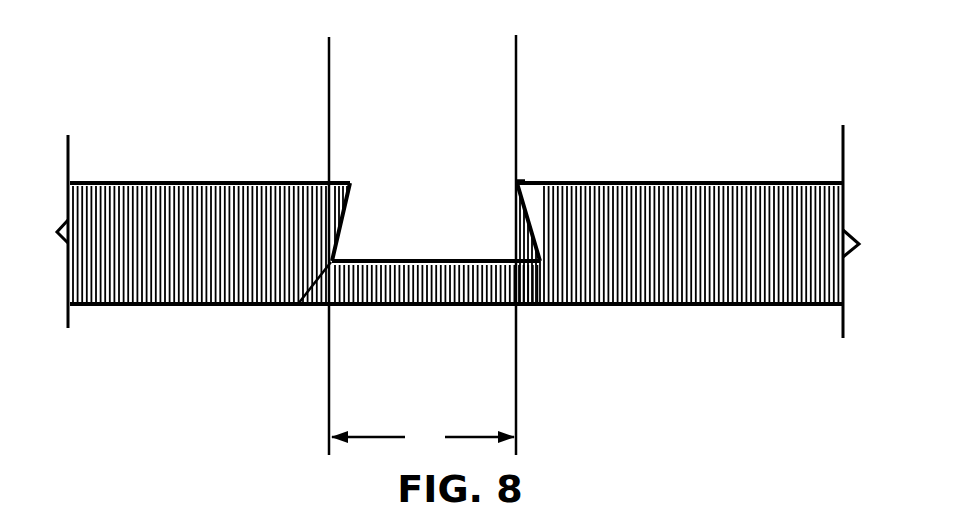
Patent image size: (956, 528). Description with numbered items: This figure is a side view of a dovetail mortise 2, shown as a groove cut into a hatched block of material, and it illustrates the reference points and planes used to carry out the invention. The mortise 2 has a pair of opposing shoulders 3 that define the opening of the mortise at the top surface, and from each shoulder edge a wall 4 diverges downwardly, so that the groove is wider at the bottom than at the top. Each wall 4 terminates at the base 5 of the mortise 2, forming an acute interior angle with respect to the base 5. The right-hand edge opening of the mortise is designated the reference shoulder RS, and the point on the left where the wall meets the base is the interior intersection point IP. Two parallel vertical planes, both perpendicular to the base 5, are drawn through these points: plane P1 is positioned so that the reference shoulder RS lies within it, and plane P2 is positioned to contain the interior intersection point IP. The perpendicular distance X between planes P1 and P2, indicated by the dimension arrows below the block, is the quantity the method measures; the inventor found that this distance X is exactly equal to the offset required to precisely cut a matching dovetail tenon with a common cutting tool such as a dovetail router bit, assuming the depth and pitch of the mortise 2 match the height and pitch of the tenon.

The dovetail mortise 2 is at (436, 164).
The shoulder 3 is at (350, 183).
The wall 4 is at (342, 217).
The base 5 is at (403, 262).
The plane P1 is at (514, 229).
The plane P2 is at (324, 229).
The reference shoulder RS is at (518, 183).
The interior intersection point IP is at (298, 304).
The perpendicular distance X is at (423, 438).